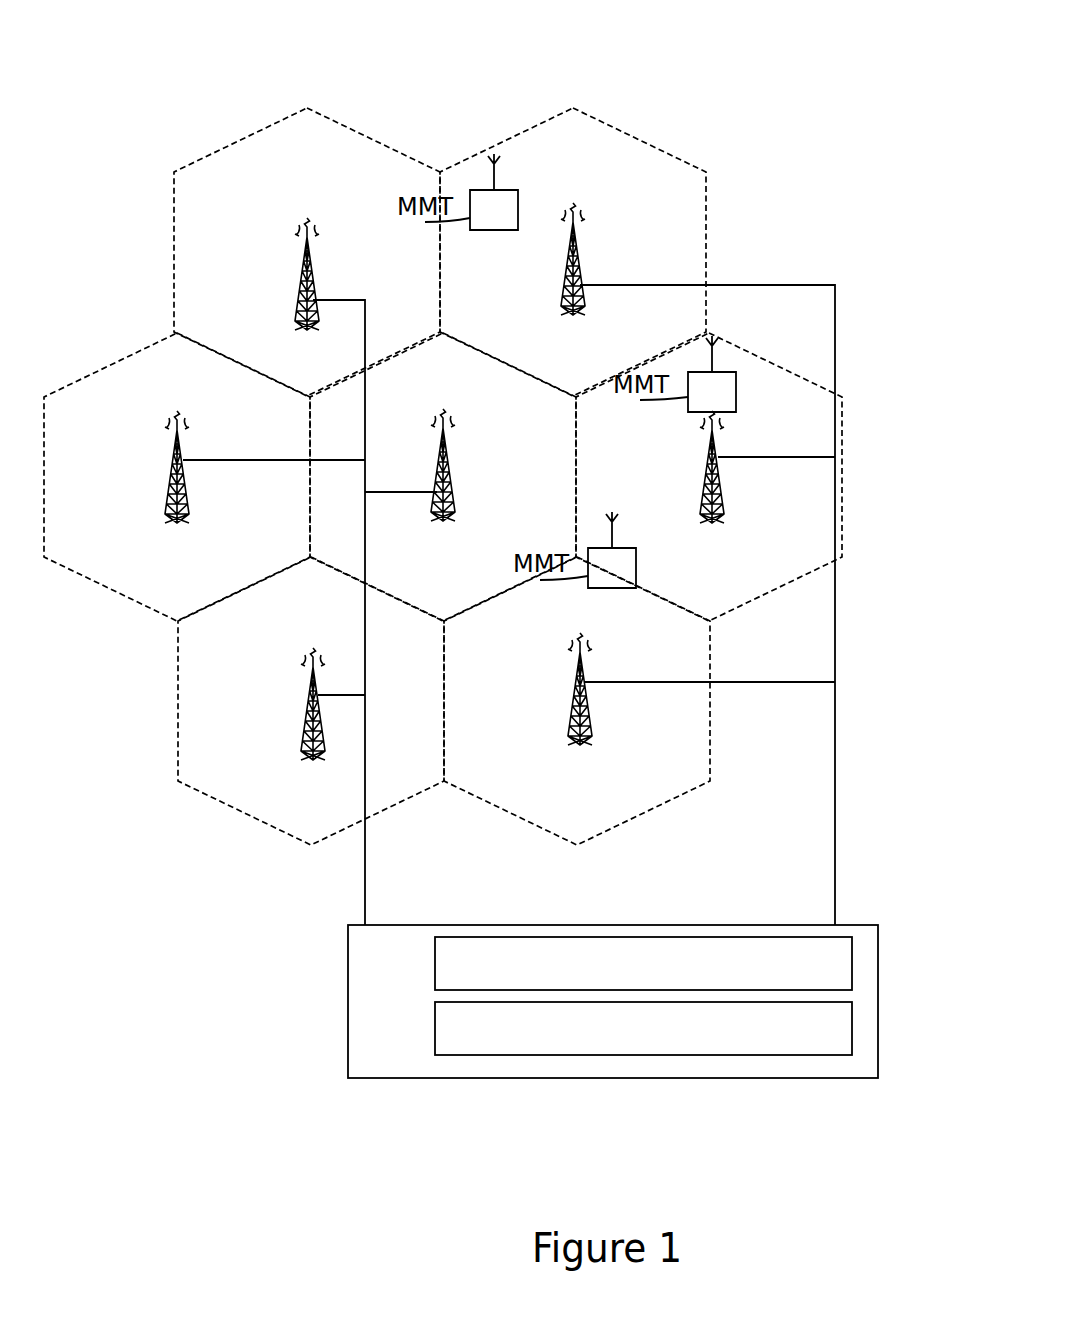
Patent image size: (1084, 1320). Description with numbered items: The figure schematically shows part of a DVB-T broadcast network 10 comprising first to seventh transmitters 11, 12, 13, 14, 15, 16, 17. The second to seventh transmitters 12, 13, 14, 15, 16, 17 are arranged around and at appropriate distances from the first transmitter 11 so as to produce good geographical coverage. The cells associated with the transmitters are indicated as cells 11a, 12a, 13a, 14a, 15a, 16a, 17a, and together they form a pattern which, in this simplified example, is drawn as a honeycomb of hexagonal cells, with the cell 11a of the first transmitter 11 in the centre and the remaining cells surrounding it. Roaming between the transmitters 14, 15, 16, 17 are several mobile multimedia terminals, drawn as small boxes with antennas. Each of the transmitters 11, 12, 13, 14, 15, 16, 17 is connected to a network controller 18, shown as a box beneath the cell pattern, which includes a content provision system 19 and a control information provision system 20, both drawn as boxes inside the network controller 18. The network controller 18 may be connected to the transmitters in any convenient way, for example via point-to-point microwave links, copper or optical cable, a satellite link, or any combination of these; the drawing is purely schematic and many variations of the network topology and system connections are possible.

The DVB-T broadcast network 10 is at (723, 60).
The first transmitter 11 is at (452, 479).
The second transmitter 12 is at (314, 268).
The third transmitter 13 is at (170, 488).
The fourth transmitter 14 is at (305, 717).
The fifth transmitter 15 is at (572, 716).
The sixth transmitter 16 is at (713, 521).
The seventh transmitter 17 is at (588, 308).
The cell 11a is at (465, 401).
The cell 12a is at (252, 259).
The cell 13a is at (280, 561).
The cell 14a is at (347, 642).
The cell 15a is at (685, 737).
The cell 16a is at (815, 505).
The cell 17a is at (665, 271).
The network controller 18 is at (400, 1078).
The content provision system 19 is at (853, 966).
The control information provision system 20 is at (838, 1057).